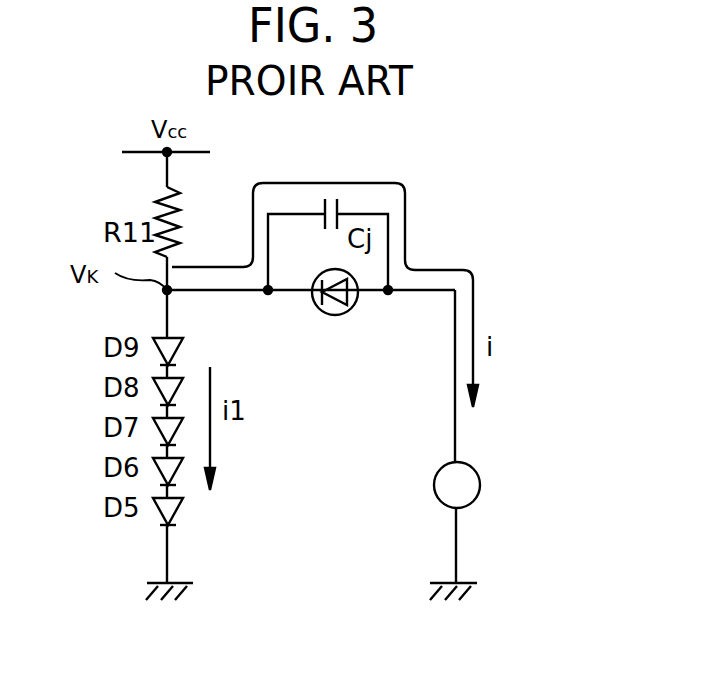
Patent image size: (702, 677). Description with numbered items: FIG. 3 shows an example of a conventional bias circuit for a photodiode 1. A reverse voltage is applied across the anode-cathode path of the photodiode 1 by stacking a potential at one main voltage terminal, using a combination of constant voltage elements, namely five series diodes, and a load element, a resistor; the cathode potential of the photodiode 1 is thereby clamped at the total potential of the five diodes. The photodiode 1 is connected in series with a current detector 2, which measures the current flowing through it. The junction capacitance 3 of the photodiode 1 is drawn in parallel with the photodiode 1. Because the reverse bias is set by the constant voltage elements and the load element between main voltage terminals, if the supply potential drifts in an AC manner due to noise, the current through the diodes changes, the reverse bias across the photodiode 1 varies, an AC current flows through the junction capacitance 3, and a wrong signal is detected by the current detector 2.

The photodiode 1 is at (337, 315).
The current detector 2 is at (434, 480).
The junction capacitance 3 is at (338, 206).